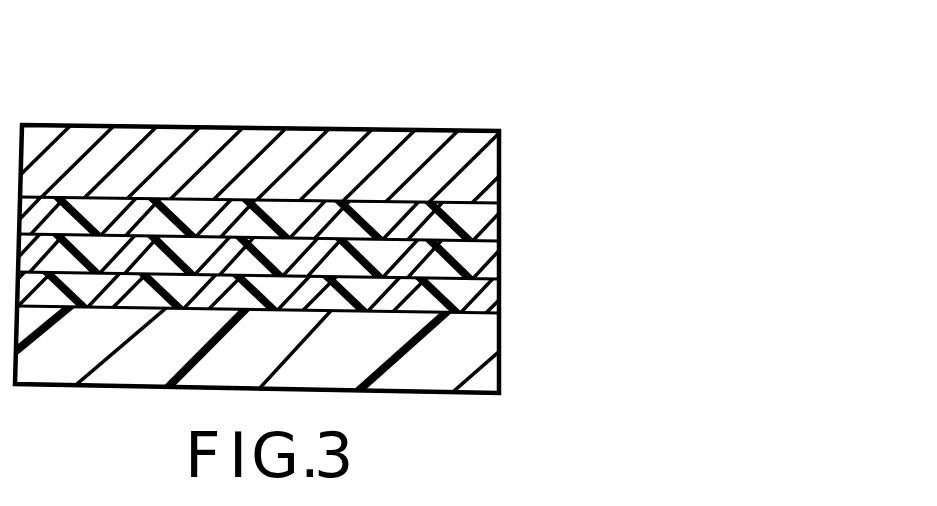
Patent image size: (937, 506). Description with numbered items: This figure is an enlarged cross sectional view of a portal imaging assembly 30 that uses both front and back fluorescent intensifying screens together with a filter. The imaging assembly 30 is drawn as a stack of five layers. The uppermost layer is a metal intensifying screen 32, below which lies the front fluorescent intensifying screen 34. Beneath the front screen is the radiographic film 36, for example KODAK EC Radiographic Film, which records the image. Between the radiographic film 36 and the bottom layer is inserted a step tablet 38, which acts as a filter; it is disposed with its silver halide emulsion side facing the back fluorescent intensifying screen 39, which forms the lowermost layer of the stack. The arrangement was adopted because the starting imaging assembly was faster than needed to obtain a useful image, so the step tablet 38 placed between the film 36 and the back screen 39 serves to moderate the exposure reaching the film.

The imaging assembly 30 is at (312, 211).
The metal intensifying screen 32 is at (503, 163).
The front fluorescent intensifying screen 34 is at (502, 217).
The radiographic film 36 is at (500, 260).
The step tablet 38 is at (502, 295).
The back fluorescent intensifying screen 39 is at (502, 347).